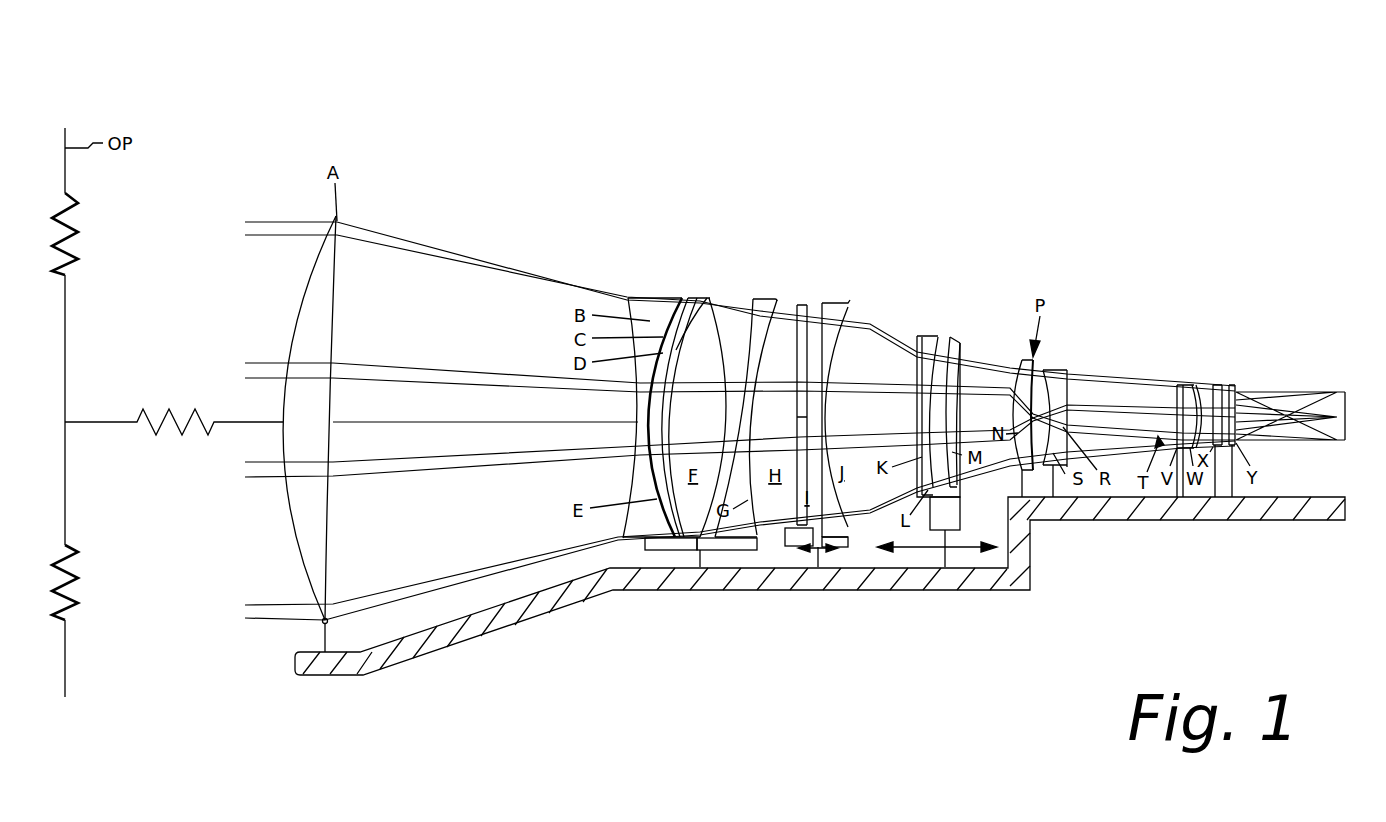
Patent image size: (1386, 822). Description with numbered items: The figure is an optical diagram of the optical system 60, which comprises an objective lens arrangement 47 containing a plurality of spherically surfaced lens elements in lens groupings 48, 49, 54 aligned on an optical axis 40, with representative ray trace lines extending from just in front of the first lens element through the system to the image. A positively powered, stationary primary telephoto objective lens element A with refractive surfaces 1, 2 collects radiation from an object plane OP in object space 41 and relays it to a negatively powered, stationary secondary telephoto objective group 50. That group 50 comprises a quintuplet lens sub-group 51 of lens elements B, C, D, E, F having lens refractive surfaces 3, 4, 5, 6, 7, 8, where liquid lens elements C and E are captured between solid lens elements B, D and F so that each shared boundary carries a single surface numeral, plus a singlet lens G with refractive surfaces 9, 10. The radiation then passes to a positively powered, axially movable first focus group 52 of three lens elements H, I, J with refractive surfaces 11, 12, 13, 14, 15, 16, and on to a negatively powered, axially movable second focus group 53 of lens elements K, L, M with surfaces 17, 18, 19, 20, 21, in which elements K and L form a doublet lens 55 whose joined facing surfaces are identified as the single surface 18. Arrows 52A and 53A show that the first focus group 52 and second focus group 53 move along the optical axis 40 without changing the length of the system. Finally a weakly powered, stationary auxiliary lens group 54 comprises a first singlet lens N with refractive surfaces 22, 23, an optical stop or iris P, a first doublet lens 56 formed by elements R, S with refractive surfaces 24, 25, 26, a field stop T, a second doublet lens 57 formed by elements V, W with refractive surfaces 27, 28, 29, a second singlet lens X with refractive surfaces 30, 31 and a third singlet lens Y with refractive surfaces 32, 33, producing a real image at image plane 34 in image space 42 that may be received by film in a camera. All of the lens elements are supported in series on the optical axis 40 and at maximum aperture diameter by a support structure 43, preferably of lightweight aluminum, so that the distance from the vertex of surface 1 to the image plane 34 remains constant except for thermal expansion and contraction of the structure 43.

The refractive surface 1 is at (303, 292).
The refractive surface 2 is at (333, 292).
The lens refractive surface 3 is at (628, 298).
The lens refractive surface 4 is at (681, 298).
The lens refractive surface 5 is at (688, 298).
The lens refractive surface 6 is at (699, 298).
The lens refractive surface 7 is at (708, 298).
The lens refractive surface 8 is at (711, 300).
The refractive surface 9 is at (753, 299).
The refractive surface 10 is at (777, 300).
The refractive surface 11 is at (767, 337).
The refractive surface 12 is at (797, 368).
The refractive surface 13 is at (799, 303).
The refractive surface 14 is at (823, 303).
The refractive surface 15 is at (848, 305).
The refractive surface 16 is at (855, 312).
The refractive surface 17 is at (914, 365).
The refractive surface 18 is at (927, 337).
The refractive surface 19 is at (950, 340).
The refractive surface 20 is at (960, 343).
The refractive surface 21 is at (957, 362).
The refractive surface 22 is at (972, 394).
The refractive surface 23 is at (1022, 360).
The refractive surface 24 is at (1038, 370).
The refractive surface 25 is at (1046, 372).
The refractive surface 26 is at (1068, 372).
The refractive surface 27 is at (1177, 385).
The refractive surface 28 is at (1190, 385).
The refractive surface 29 is at (1198, 386).
The refractive surface 30 is at (1215, 385).
The refractive surface 31 is at (1223, 385).
The refractive surface 32 is at (1236, 385).
The refractive surface 33 is at (1236, 442).
The image plane 34 is at (1347, 403).
The optical axis 40 is at (112, 422).
The object space 41 is at (157, 335).
The image space 42 is at (1336, 309).
The support structure 43 is at (719, 575).
The objective lens arrangement 47 is at (1385, 53).
The lens grouping 48 is at (783, 135).
The lens grouping 49 is at (986, 135).
The secondary telephoto objective group 50 is at (632, 189).
The quintuplet lens sub-group 51 is at (620, 238).
The first focus group 52 is at (873, 238).
The arrow 52A is at (816, 568).
The second focus group 53 is at (988, 238).
The arrow 53A is at (932, 550).
The auxiliary lens group 54 is at (1253, 240).
The doublet lens 55 is at (898, 297).
The first doublet lens 56 is at (1040, 332).
The second doublet lens 57 is at (1222, 352).
The optical system 60 is at (911, 645).